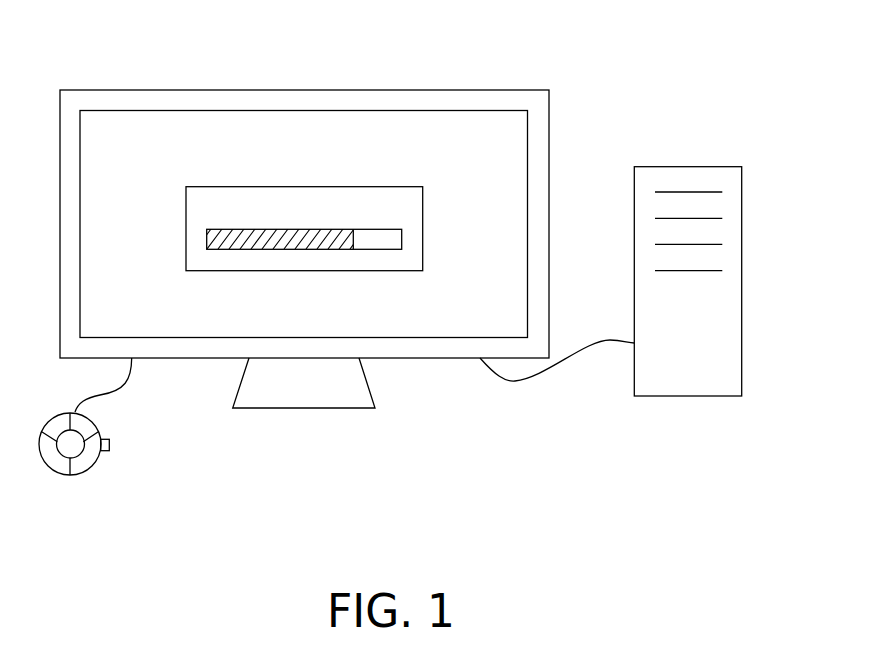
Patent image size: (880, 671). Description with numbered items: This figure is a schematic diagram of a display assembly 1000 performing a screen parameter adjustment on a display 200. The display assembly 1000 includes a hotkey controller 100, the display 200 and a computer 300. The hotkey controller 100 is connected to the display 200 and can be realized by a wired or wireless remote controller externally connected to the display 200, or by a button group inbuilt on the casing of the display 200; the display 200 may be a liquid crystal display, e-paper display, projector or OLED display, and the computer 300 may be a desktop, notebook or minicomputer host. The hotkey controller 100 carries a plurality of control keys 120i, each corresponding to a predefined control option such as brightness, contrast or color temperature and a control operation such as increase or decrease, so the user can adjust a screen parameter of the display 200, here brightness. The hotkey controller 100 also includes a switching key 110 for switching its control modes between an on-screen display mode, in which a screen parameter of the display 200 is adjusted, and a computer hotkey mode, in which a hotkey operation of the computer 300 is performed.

The display assembly 1000 is at (791, 28).
The display 200 is at (440, 90).
The computer 300 is at (688, 167).
The hotkey controller 100 is at (153, 527).
The control key 120i is at (53, 462).
The switching key 110 is at (109, 444).